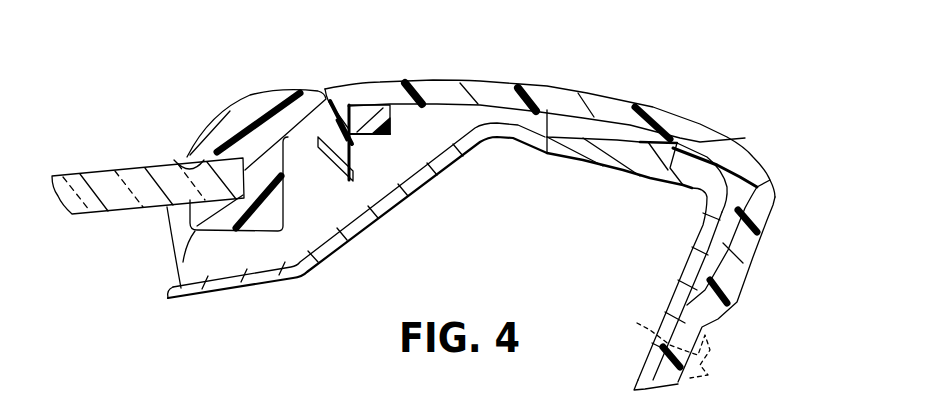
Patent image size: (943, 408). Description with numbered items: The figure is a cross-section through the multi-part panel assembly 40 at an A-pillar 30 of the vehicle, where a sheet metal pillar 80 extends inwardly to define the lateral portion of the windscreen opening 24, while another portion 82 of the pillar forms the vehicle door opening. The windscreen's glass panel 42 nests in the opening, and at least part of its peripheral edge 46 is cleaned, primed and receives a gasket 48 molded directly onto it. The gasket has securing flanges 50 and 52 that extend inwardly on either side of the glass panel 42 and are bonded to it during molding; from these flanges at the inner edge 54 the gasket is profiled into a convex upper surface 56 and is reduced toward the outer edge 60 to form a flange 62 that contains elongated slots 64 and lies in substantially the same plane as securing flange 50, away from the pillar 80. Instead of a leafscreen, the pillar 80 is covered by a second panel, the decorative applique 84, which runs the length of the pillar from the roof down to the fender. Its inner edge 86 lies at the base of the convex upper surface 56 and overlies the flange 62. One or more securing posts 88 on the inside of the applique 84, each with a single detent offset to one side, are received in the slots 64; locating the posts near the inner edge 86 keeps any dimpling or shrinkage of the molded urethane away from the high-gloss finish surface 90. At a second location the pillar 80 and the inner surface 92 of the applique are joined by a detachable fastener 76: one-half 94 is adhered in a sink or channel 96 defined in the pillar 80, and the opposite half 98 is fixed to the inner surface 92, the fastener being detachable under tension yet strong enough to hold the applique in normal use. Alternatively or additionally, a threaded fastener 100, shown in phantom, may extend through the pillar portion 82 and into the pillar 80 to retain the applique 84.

The multi-part panel assembly 40 is at (221, 58).
The A-pillar 30 is at (688, 60).
The glass panel 42 is at (106, 174).
The peripheral edge 46 is at (174, 162).
The inner edge 54 is at (172, 143).
The securing flange 50 is at (188, 155).
The gasket 48 is at (246, 98).
The convex upper surface 56 is at (290, 92).
The securing flange 52 is at (181, 258).
The windscreen opening 24 is at (241, 265).
The sheet metal pillar 80 is at (467, 163).
The applique 84 is at (494, 80).
The finish surface 90 is at (590, 93).
The opposite half of detachable fastener 98 is at (622, 137).
The detachable fastener 76 is at (725, 130).
The one-half of detachable fastener 94 is at (585, 161).
The channel 96 is at (653, 174).
The pillar portion 82 is at (777, 345).
The threaded fastener 100 is at (690, 378).
The inner edge 86 is at (338, 115).
The slots 64 is at (338, 115).
The flange 62 is at (355, 100).
The outer edge 60 is at (304, 148).
The securing post 88 is at (353, 148).
The inner surface 92 is at (437, 105).